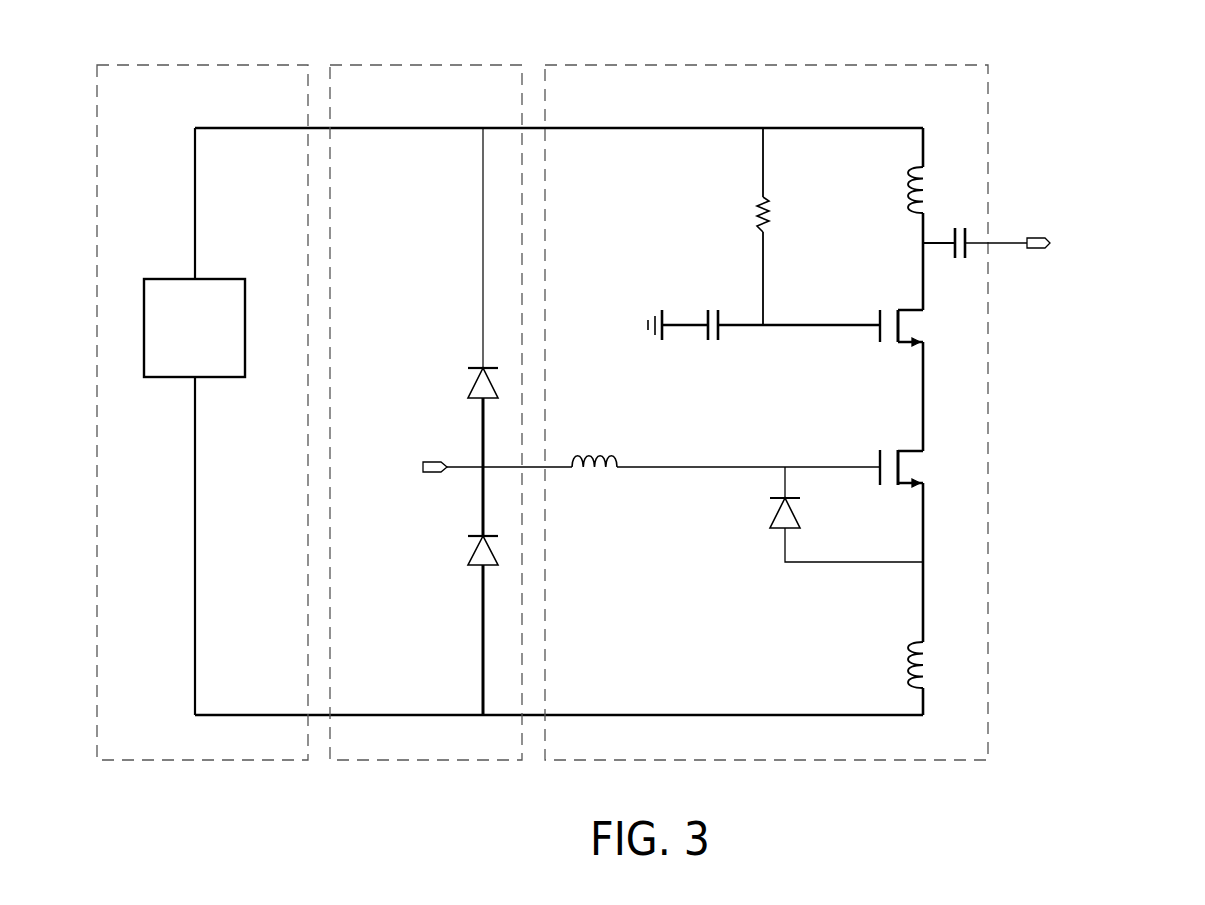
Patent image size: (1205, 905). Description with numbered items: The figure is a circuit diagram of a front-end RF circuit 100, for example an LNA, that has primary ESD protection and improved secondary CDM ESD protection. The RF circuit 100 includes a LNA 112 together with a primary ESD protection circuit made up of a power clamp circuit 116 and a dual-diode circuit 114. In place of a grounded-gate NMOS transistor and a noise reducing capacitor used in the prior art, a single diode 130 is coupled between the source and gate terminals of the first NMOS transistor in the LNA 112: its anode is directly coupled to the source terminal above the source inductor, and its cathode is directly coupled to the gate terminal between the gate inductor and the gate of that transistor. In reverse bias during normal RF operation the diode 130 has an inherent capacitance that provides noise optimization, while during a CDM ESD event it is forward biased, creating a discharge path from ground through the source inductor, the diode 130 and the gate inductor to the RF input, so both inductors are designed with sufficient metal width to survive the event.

The RF front end circuit 100 is at (217, 817).
The LNA 112 is at (818, 65).
The dual-diode circuit 114 is at (435, 65).
The power clamp circuit 116 is at (225, 65).
The diode 130 is at (821, 514).